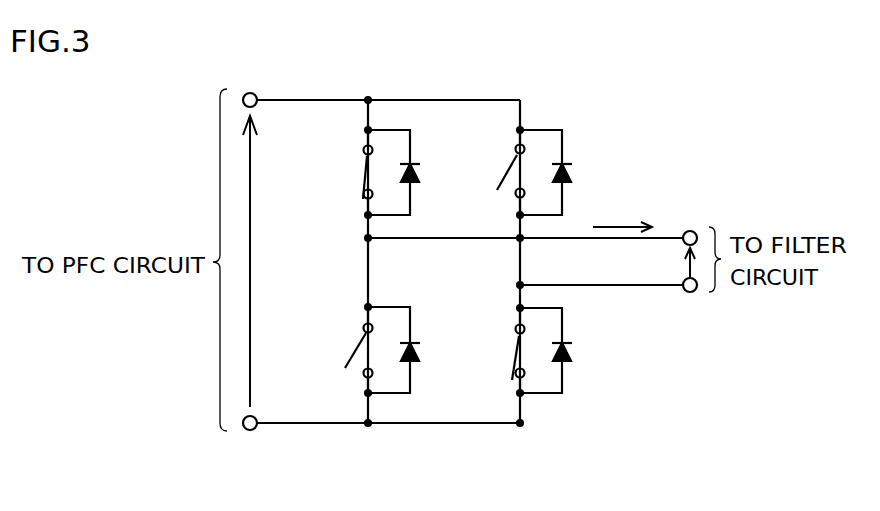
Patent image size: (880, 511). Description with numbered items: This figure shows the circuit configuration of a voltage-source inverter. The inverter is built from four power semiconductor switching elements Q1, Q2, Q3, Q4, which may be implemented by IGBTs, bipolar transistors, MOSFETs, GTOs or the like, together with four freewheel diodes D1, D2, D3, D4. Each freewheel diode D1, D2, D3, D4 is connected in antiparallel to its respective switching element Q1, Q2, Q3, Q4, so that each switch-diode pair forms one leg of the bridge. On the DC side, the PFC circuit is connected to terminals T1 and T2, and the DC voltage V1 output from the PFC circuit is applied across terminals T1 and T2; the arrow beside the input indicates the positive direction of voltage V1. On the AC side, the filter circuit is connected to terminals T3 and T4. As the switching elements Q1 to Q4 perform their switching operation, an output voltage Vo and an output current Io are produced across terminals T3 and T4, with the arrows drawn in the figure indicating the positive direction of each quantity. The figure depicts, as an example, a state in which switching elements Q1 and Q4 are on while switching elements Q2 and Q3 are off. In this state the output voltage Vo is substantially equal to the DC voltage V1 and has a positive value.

The terminal T1 is at (250, 92).
The terminal T2 is at (250, 431).
The terminal T3 is at (690, 230).
The terminal T4 is at (690, 293).
The switching element Q1 is at (366, 172).
The switching element Q2 is at (508, 167).
The switching element Q3 is at (356, 351).
The switching element Q4 is at (516, 343).
The freewheel diode D1 is at (420, 175).
The freewheel diode D2 is at (572, 176).
The freewheel diode D3 is at (420, 354).
The freewheel diode D4 is at (572, 352).
The DC voltage V1 is at (265, 261).
The output voltage Vo is at (672, 262).
The output current Io is at (622, 216).